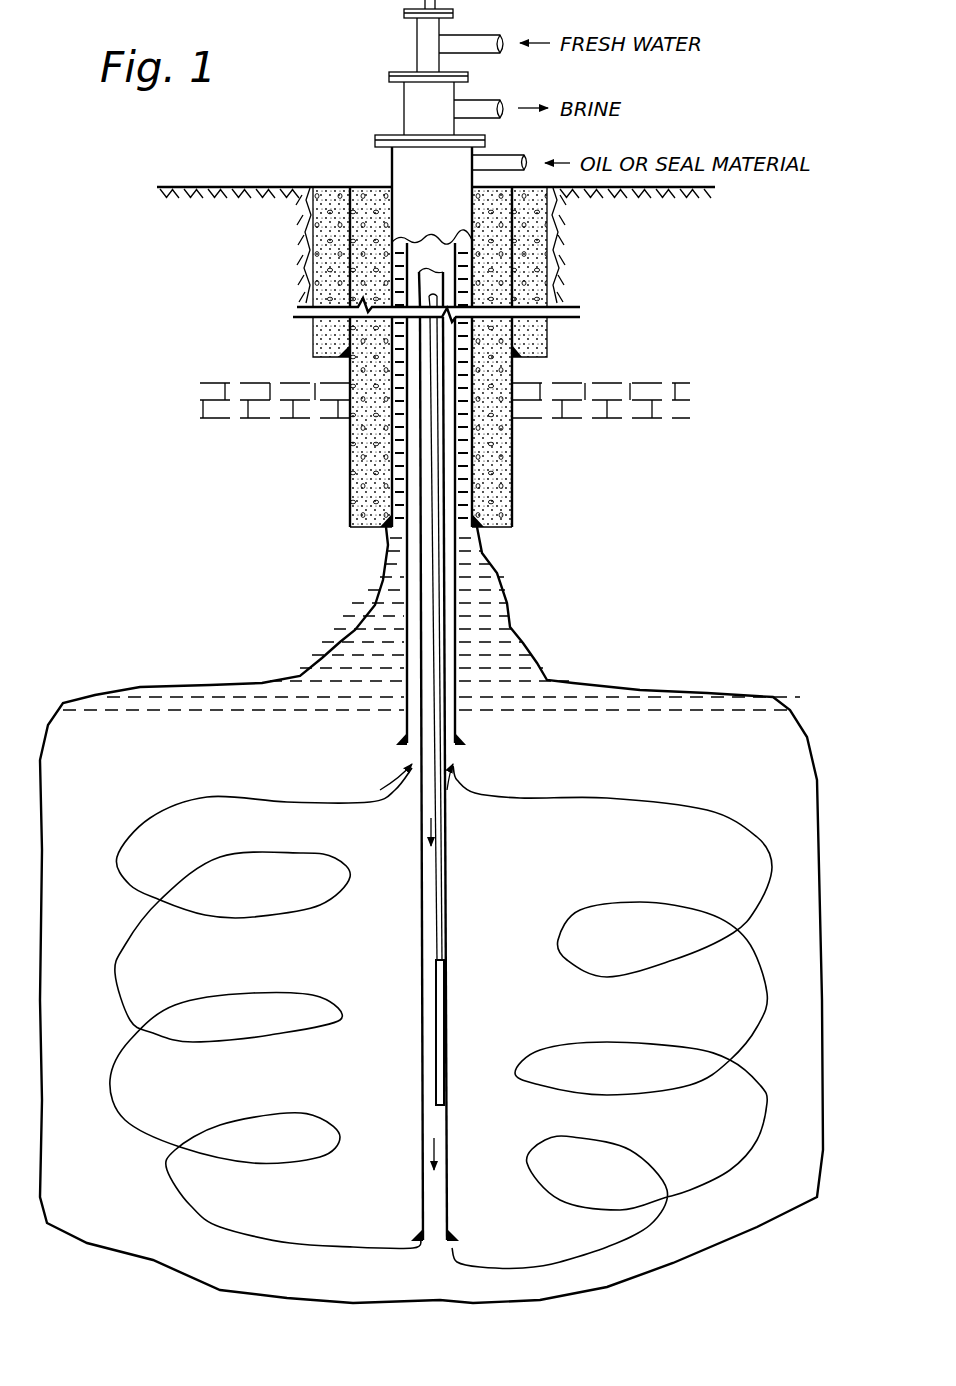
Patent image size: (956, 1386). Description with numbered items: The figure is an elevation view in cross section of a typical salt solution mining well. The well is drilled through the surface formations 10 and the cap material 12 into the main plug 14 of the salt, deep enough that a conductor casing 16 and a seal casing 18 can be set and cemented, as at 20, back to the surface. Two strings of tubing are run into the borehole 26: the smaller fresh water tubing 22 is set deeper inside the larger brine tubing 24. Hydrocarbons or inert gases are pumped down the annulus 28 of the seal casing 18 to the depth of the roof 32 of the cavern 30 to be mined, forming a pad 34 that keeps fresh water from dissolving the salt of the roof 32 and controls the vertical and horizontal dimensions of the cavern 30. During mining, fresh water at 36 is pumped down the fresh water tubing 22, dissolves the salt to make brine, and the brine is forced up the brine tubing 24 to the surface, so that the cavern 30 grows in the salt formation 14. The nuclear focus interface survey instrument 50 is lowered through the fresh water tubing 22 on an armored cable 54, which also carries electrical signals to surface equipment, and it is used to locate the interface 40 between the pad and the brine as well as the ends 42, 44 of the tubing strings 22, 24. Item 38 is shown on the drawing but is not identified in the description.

The surface formations 10 is at (603, 263).
The cap material 12 is at (652, 380).
The main plug of the salt 14 is at (641, 475).
The conductor casing 16 is at (576, 323).
The seal casing 18 is at (476, 500).
The cement 20 is at (500, 455).
The fresh water tubing 22 is at (441, 1130).
The brine tubing 24 is at (457, 728).
The borehole 26 is at (510, 621).
The annulus 28 is at (478, 588).
The cavern 30 is at (637, 949).
The roof 32 is at (253, 688).
The pad 34 is at (288, 702).
The fresh water 36 is at (415, 1250).
The outer tubing string 38 is at (410, 598).
The interface 40 is at (403, 715).
The end of fresh water tubing 42 is at (450, 1248).
The end of brine tubing 44 is at (457, 755).
The nuclear focus interface survey instrument 50 is at (445, 1011).
The armored cable 54 is at (440, 903).